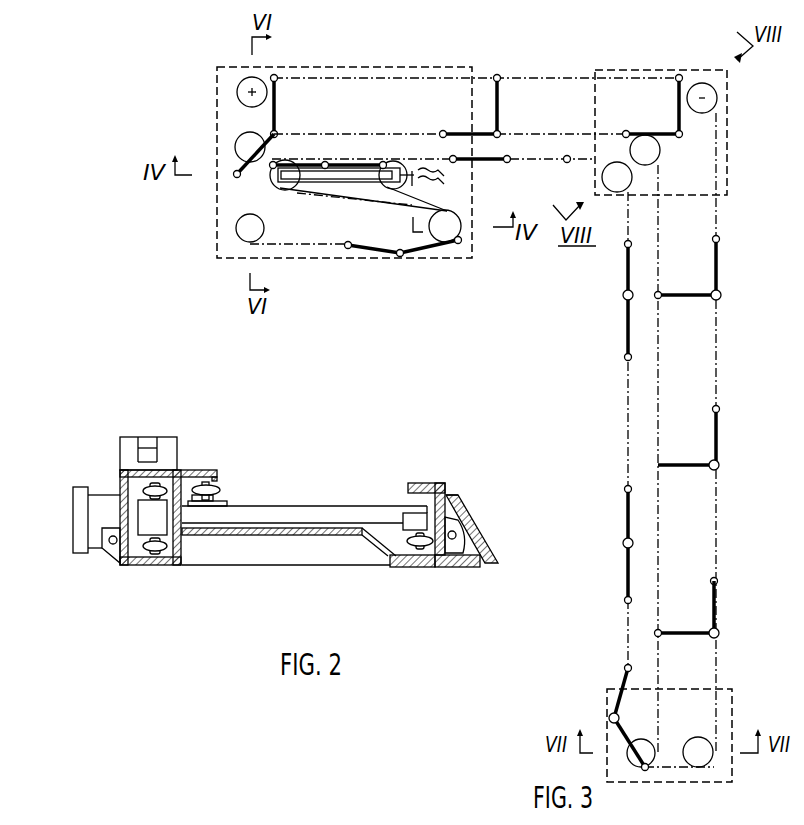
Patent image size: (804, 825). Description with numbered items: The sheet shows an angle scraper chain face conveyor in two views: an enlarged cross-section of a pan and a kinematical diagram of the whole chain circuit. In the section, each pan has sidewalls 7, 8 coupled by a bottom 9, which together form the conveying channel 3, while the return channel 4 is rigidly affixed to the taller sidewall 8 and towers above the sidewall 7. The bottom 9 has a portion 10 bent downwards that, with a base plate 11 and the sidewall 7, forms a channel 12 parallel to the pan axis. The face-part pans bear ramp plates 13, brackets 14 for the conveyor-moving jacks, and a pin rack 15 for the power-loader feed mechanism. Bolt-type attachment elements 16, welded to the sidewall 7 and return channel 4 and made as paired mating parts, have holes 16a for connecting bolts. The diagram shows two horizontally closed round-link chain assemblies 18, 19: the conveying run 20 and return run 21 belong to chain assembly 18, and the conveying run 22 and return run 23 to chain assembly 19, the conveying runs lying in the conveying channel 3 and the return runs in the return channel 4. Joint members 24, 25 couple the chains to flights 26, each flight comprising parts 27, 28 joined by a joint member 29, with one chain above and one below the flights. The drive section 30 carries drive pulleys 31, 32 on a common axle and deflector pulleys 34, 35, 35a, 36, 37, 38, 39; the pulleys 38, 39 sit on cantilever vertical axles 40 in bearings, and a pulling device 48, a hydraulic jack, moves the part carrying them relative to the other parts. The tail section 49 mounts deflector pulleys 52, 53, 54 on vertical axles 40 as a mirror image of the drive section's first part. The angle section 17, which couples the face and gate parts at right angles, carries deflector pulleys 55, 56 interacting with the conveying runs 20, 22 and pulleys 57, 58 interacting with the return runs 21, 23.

In FIG. 2, the conveying channel 3 is at (299, 483).
In FIG. 2, the return channel 4 is at (155, 520).
In FIG. 2, the sidewall 7 is at (423, 483).
In FIG. 2, the sidewall 8 is at (163, 520).
In FIG. 2, the bottom 9 is at (286, 542).
In FIG. 2, the bent portion 10 is at (378, 548).
In FIG. 2, the base plate 11 is at (437, 568).
In FIG. 2, the channel 12 is at (400, 552).
In FIG. 2, the ramp plate 13 is at (458, 513).
In FIG. 2, the jack bracket 14 is at (107, 503).
In FIG. 2, the pin rack 15 is at (168, 443).
In FIG. 2, the attachment element 16 is at (102, 549).
In FIG. 2, the hole 16a is at (103, 533).
In FIG. 3, the angle section 17 is at (647, 63).
In FIG. 3, the chain assembly 18 is at (650, 391).
In FIG. 3, the chain assembly 19 is at (724, 367).
In FIG. 2, the conveying run 20 is at (217, 492).
In FIG. 2, the return run 21 is at (155, 483).
In FIG. 2, the conveying run 22 is at (405, 518).
In FIG. 2, the return run 23 is at (143, 527).
In FIG. 3, the joint member 24 is at (626, 488).
In FIG. 3, the joint member 25 is at (624, 599).
In FIG. 3, the flight 26 is at (722, 604).
In FIG. 2, the flight 26 is at (130, 556).
In FIG. 3, the flight part 27 is at (626, 263).
In FIG. 2, the flight part 27 is at (333, 518).
In FIG. 3, the flight part 28 is at (626, 335).
In FIG. 3, the joint member 29 is at (624, 541).
In FIG. 3, the drive section 30 is at (452, 265).
In FIG. 3, the drive pulley 31 is at (403, 258).
In FIG. 3, the drive pulley 32 is at (440, 235).
In FIG. 3, the deflector pulley 34 is at (243, 84).
In FIG. 3, the deflector pulley 35 is at (217, 136).
In FIG. 3, the deflector pulley 35a is at (240, 143).
In FIG. 3, the deflector pulley 36 is at (263, 258).
In FIG. 3, the deflector pulley 37 is at (240, 234).
In FIG. 3, the deflector pulley 38 is at (282, 189).
In FIG. 3, the deflector pulley 39 is at (387, 186).
In FIG. 3, the cantilever vertical axle 40 is at (262, 84).
In FIG. 3, the pulling device 48 is at (440, 187).
In FIG. 3, the tail section 49 is at (741, 709).
In FIG. 3, the deflector pulley 52 is at (696, 741).
In FIG. 3, the deflector pulley 53 is at (660, 742).
In FIG. 3, the deflector pulley 54 is at (648, 758).
In FIG. 3, the deflector pulley 55 is at (702, 100).
In FIG. 3, the deflector pulley 56 is at (656, 151).
In FIG. 3, the deflector pulley 57 is at (591, 144).
In FIG. 3, the deflector pulley 58 is at (615, 175).